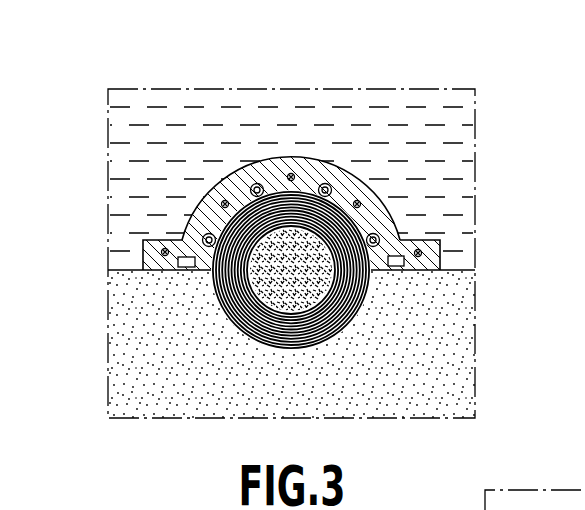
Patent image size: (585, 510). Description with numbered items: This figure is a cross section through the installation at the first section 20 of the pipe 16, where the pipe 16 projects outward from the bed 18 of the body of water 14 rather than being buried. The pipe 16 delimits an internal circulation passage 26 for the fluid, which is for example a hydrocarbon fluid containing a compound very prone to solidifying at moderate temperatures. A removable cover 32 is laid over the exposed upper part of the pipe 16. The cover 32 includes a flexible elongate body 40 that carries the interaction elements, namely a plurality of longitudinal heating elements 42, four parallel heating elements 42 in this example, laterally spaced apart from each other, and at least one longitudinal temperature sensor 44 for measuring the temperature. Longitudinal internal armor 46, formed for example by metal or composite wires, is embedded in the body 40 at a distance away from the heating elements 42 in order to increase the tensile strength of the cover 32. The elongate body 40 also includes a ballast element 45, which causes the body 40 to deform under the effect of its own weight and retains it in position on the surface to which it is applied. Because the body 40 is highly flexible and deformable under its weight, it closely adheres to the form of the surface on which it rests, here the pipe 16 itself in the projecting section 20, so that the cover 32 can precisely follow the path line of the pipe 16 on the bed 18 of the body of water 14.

The body of water 14 is at (420, 118).
The pipe 16 is at (237, 338).
The bed 18 is at (127, 270).
The first section 20 is at (373, 310).
The internal circulation passage 26 is at (307, 310).
The removable cover 32 is at (440, 255).
The flexible elongate body 40 is at (322, 168).
The longitudinal heating element 42 is at (250, 178).
The longitudinal temperature sensor 44 is at (262, 188).
The ballast element 45 is at (187, 268).
The longitudinal internal armor 46 is at (292, 174).